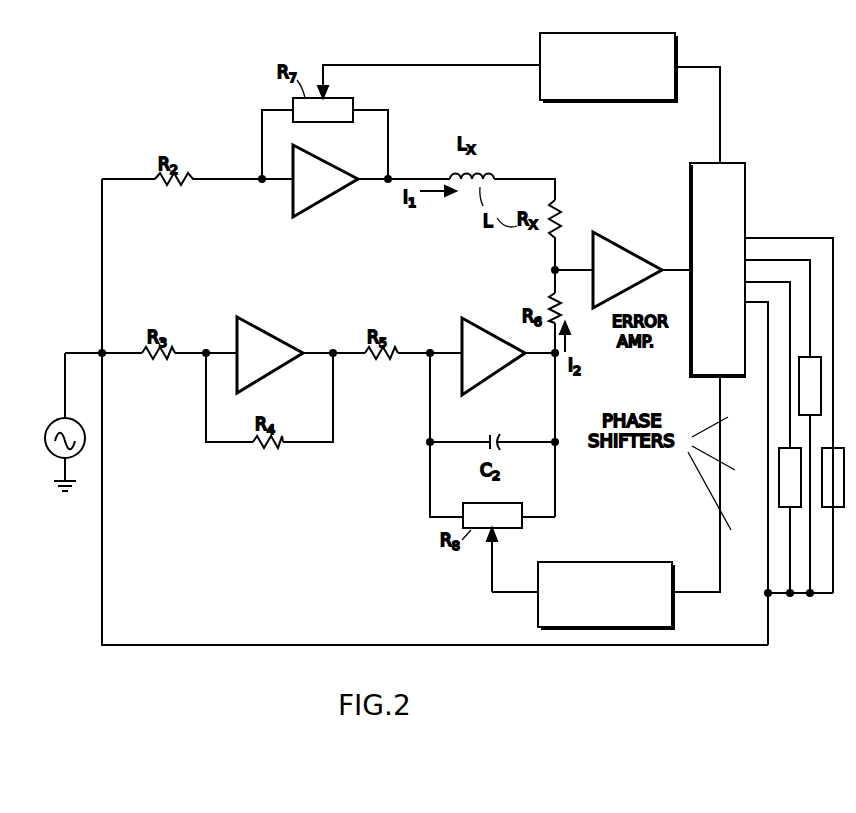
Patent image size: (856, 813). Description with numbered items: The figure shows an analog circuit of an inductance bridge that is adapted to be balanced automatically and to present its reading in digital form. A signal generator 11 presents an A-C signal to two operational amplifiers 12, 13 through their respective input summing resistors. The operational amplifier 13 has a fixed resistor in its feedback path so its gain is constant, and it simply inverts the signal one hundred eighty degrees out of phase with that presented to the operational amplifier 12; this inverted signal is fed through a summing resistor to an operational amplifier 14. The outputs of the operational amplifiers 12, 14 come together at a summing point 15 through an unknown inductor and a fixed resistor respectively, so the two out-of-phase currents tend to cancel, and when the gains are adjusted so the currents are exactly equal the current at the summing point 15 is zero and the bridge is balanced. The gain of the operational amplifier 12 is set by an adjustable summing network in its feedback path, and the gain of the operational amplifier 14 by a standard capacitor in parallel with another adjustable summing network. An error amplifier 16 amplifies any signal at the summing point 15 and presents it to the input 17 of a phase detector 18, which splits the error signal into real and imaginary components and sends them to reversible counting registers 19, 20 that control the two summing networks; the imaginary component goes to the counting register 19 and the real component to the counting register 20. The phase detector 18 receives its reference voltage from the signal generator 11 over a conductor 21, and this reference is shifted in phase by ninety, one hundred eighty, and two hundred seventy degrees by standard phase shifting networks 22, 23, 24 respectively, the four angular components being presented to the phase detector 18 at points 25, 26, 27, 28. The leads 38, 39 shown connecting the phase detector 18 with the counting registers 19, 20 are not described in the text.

The signal generator 11 is at (48, 425).
The operational amplifier 12 is at (335, 193).
The operational amplifier 13 is at (279, 338).
The operational amplifier 14 is at (505, 342).
The summing point 15 is at (537, 270).
The error amplifier 16 is at (637, 255).
The input of phase detector 17 is at (688, 273).
The phase detector 18 is at (742, 175).
The reversible counting register 19 is at (611, 33).
The reversible counting register 20 is at (611, 562).
The conductor 21 is at (295, 645).
The phase shifting network 22 is at (779, 498).
The phase shifting network 23 is at (796, 378).
The phase shifting network 24 is at (820, 508).
The reference signal input point 25 is at (789, 464).
The reference signal input point 26 is at (767, 428).
The reference signal input point 27 is at (777, 417).
The reference signal input point 28 is at (789, 406).
The counting register input lead 38 is at (718, 163).
The phase detector output lead to counting register 39 is at (712, 382).